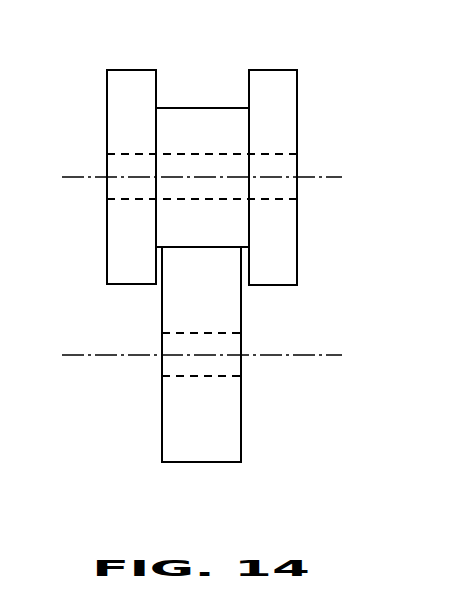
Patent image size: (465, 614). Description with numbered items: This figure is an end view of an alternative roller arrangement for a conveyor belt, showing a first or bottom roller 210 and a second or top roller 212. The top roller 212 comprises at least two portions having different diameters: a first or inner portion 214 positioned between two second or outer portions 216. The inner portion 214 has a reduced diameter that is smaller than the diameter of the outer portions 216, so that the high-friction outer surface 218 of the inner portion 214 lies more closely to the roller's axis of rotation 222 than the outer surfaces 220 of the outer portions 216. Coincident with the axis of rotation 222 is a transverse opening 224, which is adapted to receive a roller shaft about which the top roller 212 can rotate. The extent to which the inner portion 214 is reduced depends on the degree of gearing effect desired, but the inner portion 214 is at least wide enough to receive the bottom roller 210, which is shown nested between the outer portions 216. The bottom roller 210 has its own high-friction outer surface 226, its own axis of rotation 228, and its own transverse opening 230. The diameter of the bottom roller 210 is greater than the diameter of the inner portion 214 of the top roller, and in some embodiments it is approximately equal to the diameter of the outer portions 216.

The bottom roller 210 is at (215, 368).
The top roller 212 is at (214, 164).
The inner portion 214 is at (206, 132).
The outer portions 216 is at (125, 69).
The high-friction outer surface 218 is at (214, 247).
The outer surfaces 220 is at (128, 286).
The axis of rotation 222 is at (325, 175).
The transverse opening 224 is at (143, 155).
The high-friction outer surface 226 is at (203, 464).
The axis of rotation 228 is at (322, 357).
The transverse opening 230 is at (185, 376).